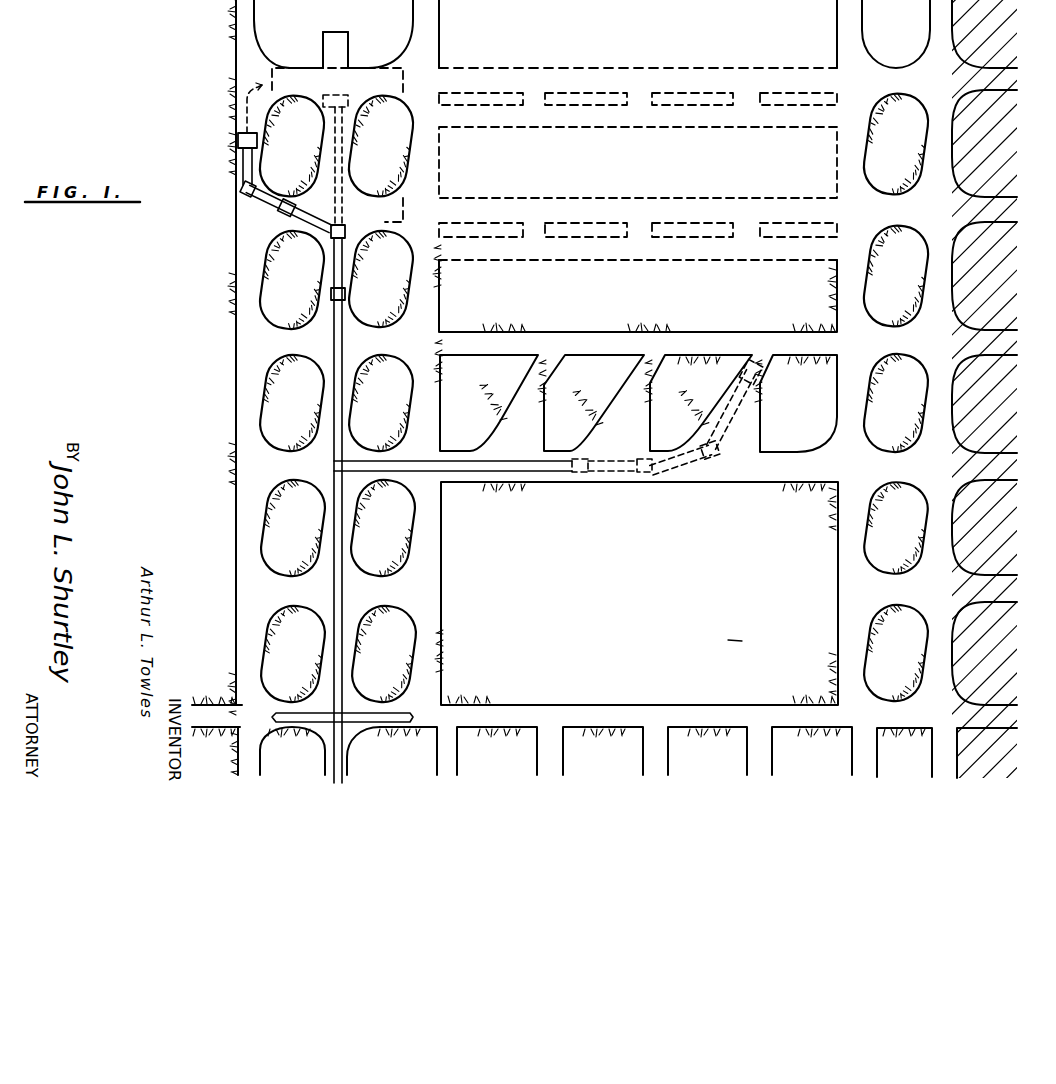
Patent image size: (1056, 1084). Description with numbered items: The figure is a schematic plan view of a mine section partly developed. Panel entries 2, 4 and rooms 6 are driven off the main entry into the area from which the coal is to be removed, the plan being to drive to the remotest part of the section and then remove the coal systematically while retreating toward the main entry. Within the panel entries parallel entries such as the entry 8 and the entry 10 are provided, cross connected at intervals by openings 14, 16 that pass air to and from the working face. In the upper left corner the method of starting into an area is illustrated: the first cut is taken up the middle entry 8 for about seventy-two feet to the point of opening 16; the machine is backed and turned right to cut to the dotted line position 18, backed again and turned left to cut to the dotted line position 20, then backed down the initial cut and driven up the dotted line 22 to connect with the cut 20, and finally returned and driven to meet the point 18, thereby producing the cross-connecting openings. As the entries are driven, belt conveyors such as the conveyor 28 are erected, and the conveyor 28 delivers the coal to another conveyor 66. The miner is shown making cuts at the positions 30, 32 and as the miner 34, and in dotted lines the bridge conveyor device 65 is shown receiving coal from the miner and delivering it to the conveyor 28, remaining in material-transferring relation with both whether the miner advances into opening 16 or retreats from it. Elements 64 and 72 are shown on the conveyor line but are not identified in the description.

The panel entry 2 is at (1038, 572).
The panel entry 4 is at (242, 572).
The rooms 6 is at (545, 490).
The entry 8 is at (348, 437).
The entry 10 is at (441, 542).
The opening 14 is at (305, 450).
The opening 16 is at (338, 32).
The dotted line position 18 is at (405, 94).
The dotted line position 20 is at (270, 68).
The dotted line 22 is at (247, 97).
The belt conveyor 28 is at (338, 352).
The miner position 30 is at (348, 97).
The miner position 32 is at (753, 360).
The miner 34 is at (240, 140).
The fitting 64 is at (338, 263).
The bridge conveyor device 65 is at (265, 203).
The conveyor 66 is at (388, 717).
The valve 72 is at (345, 297).